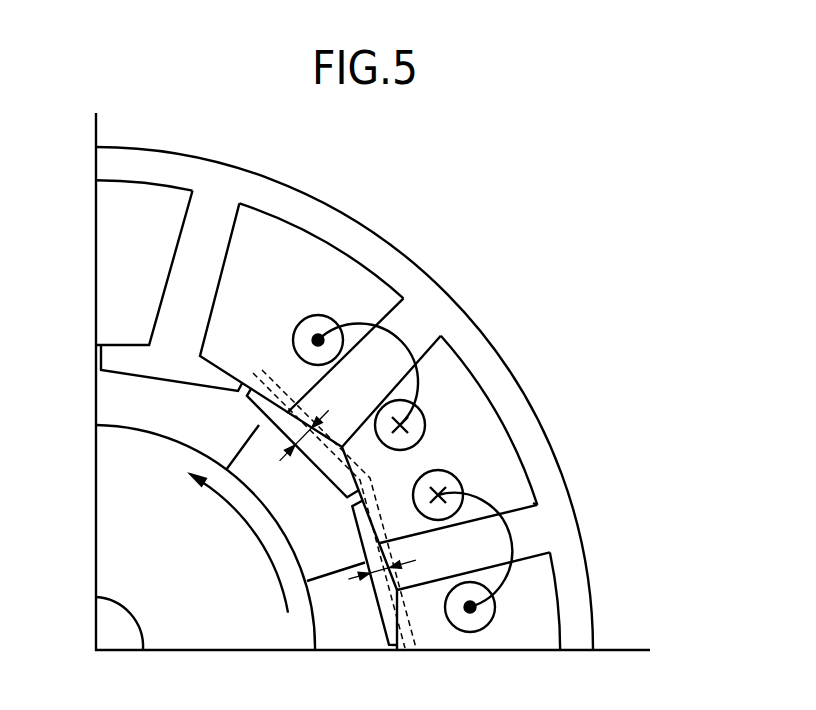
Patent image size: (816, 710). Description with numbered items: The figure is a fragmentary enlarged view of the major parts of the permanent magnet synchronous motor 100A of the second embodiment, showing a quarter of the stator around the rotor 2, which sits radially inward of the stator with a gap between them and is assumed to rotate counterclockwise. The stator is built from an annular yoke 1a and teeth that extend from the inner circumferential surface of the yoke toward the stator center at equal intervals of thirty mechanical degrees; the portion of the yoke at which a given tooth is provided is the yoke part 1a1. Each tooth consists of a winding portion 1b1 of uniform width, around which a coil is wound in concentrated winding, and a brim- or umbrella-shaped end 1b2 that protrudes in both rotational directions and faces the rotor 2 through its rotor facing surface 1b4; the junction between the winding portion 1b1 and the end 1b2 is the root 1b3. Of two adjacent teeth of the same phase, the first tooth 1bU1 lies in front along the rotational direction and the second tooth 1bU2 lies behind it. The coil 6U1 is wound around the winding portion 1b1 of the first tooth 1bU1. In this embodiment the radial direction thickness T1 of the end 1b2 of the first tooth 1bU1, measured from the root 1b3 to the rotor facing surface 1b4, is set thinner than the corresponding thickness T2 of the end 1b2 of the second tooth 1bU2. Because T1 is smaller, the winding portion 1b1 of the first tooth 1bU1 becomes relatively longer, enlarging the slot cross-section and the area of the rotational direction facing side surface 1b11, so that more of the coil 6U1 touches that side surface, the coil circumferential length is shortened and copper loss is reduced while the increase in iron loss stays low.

The permanent magnet synchronous motor 100A is at (462, 142).
The rotor 2 is at (96, 538).
The yoke 1a is at (503, 441).
The yoke part 1a1 is at (424, 296).
The winding portion 1b1 is at (427, 302).
The end 1b2 is at (407, 330).
The root 1b3 is at (405, 355).
The rotor facing surface 1b4 is at (438, 398).
The rotational direction facing side surface 1b11 is at (530, 506).
The first tooth 1bU1 is at (678, 465).
The second tooth 1bU2 is at (568, 250).
The coil 6U1 is at (455, 418).
The radial direction thickness of the end of the first tooth T1 is at (350, 577).
The radial direction thickness of the end of the second tooth T2 is at (325, 411).